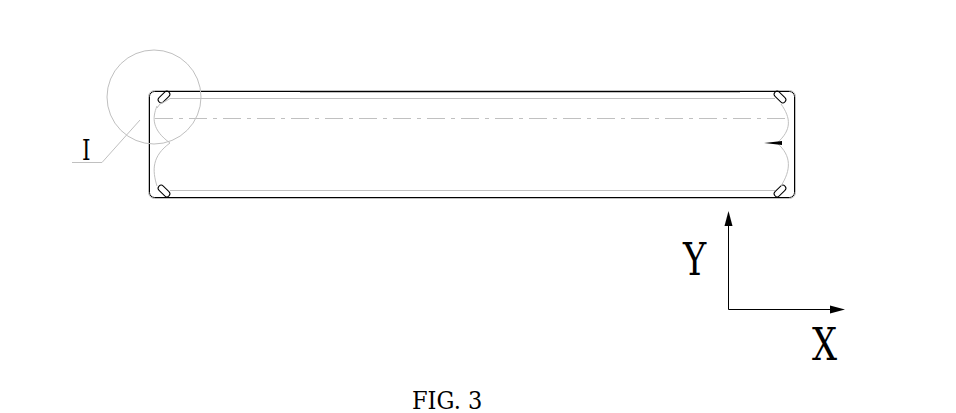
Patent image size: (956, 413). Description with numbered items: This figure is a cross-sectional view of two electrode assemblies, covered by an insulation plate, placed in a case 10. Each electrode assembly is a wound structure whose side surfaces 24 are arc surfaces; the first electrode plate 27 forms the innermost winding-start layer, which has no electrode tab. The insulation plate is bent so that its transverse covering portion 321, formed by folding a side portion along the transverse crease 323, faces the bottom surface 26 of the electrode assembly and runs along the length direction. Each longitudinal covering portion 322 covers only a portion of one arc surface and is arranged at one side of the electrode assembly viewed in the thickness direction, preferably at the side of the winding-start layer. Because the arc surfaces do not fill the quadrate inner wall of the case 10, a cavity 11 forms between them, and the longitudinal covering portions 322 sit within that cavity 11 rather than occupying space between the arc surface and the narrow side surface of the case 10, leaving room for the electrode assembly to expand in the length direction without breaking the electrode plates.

The case 10 is at (612, 92).
The cavity 11 is at (168, 100).
The side surface 24 is at (155, 112).
The bottom surface 26 is at (287, 159).
The first electrode plate 27 is at (718, 118).
The transverse covering portion 321 is at (267, 97).
The longitudinal covering portion 322 is at (162, 95).
The transverse crease 323 is at (462, 93).